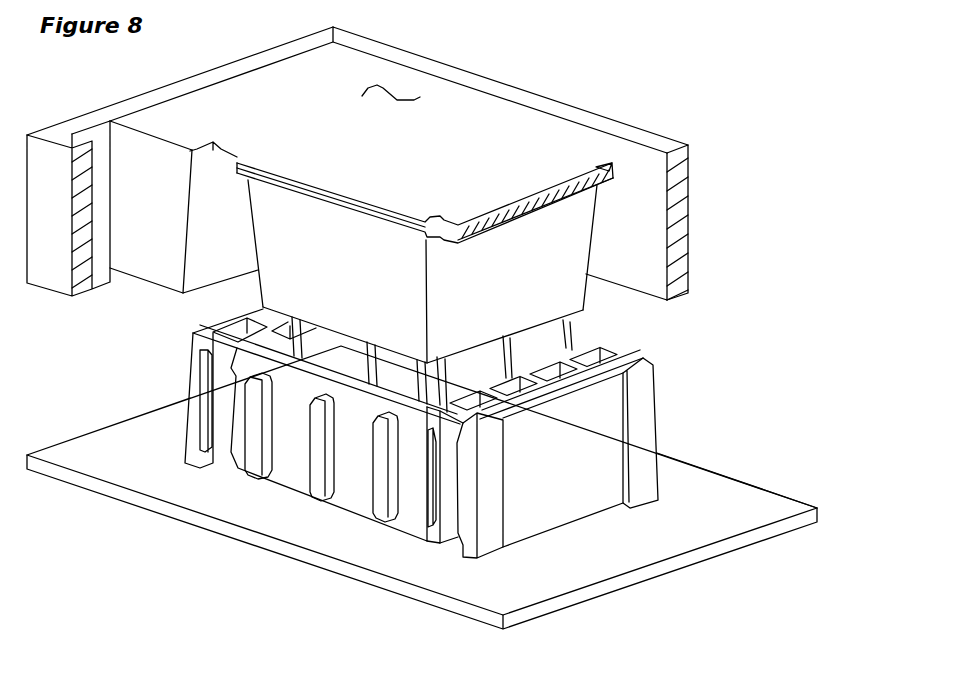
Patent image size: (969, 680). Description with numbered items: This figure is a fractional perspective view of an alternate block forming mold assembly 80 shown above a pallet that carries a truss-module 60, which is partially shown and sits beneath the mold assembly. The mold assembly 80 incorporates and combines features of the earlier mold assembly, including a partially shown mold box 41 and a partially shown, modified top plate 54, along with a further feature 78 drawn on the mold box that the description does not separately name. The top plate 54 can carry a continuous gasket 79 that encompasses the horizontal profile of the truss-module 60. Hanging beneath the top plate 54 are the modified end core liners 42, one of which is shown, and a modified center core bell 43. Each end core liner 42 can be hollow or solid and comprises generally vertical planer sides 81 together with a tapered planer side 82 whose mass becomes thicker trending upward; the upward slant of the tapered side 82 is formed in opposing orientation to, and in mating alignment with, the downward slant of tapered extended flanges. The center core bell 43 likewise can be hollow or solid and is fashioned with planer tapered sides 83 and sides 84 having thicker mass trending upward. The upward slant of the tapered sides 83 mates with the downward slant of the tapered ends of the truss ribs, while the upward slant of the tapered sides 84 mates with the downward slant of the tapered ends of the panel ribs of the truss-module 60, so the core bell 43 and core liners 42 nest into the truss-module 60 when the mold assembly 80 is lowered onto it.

The block forming mold assembly 80 is at (583, 80).
The top plate 54 is at (257, 92).
The mold box 41 is at (437, 68).
The frame inner wall notch 78 is at (520, 114).
The end core liner 42 is at (163, 225).
The vertical planer side 81 is at (140, 248).
The tapered planer side 82 is at (207, 253).
The center core bell 43 is at (352, 282).
The continuous gasket 79 is at (293, 191).
The tapered side 83 is at (527, 250).
The tapered side 84 is at (338, 240).
The truss-module 60 is at (684, 421).